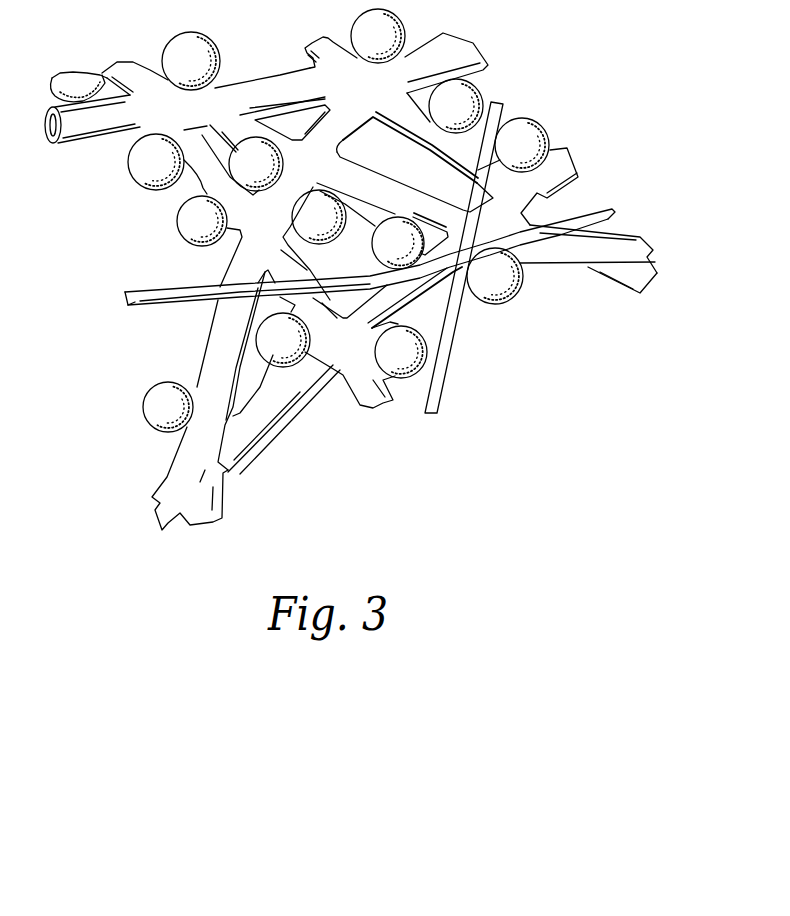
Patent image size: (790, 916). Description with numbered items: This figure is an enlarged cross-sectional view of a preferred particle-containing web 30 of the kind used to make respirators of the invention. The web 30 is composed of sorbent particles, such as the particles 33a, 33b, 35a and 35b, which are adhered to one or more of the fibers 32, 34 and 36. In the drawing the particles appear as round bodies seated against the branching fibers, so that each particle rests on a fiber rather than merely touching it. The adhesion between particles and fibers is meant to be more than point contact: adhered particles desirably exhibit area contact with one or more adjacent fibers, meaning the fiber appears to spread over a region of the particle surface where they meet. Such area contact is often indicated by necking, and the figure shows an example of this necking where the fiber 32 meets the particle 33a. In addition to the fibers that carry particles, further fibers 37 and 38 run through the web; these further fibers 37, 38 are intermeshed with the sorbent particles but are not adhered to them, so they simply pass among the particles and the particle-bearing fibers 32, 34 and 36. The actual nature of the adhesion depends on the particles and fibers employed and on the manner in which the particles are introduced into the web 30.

The particle-containing web 30 is at (561, 124).
The fiber 32 is at (640, 237).
The sorbent particle 33a is at (507, 305).
The sorbent particle 33b is at (378, 221).
The fiber 34 is at (152, 500).
The sorbent particle 35a is at (410, 378).
The sorbent particle 35b is at (277, 357).
The fiber 36 is at (367, 402).
The further fiber 37 is at (610, 207).
The further fiber 38 is at (500, 103).